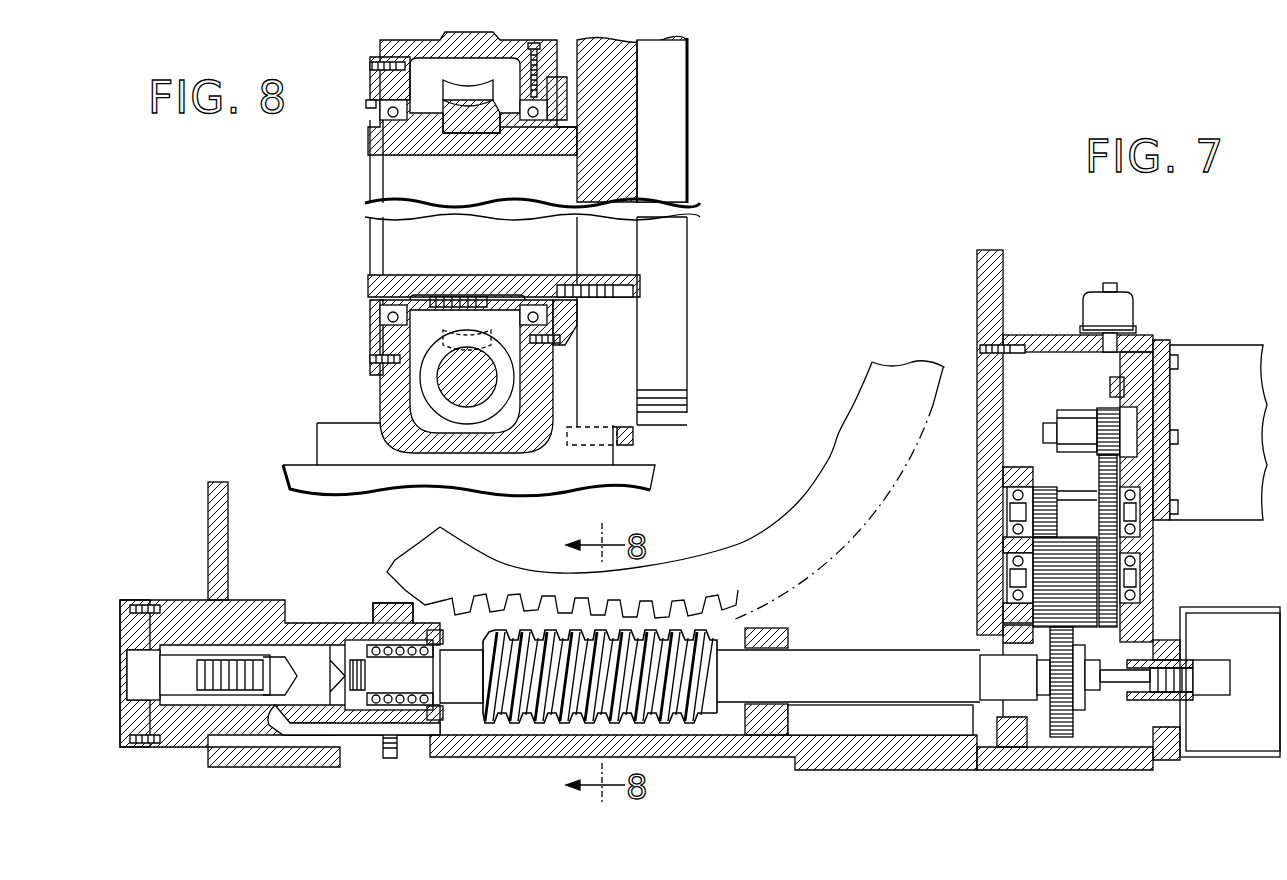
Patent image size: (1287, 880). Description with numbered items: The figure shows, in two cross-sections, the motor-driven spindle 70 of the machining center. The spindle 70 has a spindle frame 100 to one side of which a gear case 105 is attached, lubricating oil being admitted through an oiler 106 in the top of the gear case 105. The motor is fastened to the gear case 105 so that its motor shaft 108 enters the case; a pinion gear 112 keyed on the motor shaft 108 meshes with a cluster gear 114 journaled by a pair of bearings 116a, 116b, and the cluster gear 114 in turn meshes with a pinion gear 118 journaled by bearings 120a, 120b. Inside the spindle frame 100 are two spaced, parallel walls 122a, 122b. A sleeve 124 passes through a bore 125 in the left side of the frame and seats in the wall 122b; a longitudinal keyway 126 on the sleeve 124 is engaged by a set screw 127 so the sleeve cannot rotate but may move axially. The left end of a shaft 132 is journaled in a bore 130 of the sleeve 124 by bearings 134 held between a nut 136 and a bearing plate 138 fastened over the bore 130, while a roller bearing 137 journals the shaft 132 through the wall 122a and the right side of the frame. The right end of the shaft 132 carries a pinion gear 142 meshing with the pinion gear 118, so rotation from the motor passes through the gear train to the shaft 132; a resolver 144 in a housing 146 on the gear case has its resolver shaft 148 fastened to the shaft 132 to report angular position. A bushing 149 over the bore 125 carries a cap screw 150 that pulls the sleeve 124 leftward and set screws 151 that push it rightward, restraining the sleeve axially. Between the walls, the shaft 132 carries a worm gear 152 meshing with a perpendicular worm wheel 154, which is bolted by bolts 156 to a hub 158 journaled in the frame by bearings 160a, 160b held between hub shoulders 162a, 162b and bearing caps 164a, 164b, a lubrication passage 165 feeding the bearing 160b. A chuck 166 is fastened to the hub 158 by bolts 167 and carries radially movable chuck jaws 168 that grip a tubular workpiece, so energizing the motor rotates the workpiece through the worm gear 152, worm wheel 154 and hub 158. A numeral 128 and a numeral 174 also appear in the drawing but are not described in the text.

In FIG. 7, the spindle 70 is at (1070, 285).
In FIG. 8, the spindle frame 100 is at (397, 48).
In FIG. 7, the spindle frame 100 is at (220, 505).
In FIG. 7, the gear case 105 is at (1051, 335).
In FIG. 7, the oiler 106 is at (1137, 305).
In FIG. 7, the motor shaft 108 is at (1075, 419).
In FIG. 7, the pinion gear 112 is at (1098, 431).
In FIG. 7, the cluster gear 114 is at (1070, 512).
In FIG. 7, the bearing 116a is at (1008, 493).
In FIG. 7, the bearing 116b is at (1140, 534).
In FIG. 7, the pinion gear 118 is at (1105, 617).
In FIG. 7, the bearing 120a is at (1008, 565).
In FIG. 7, the bearing 120b is at (1143, 568).
In FIG. 7, the wall 122a is at (800, 624).
In FIG. 7, the wall 122b is at (379, 603).
In FIG. 7, the sleeve 124 is at (295, 620).
In FIG. 7, the bore 125 is at (176, 753).
In FIG. 7, the keyway 126 is at (260, 750).
In FIG. 7, the set screw 127 is at (394, 760).
In FIG. 7, the housing bore 128 is at (308, 738).
In FIG. 7, the bore 130 is at (330, 658).
In FIG. 7, the shaft 132 is at (474, 698).
In FIG. 7, the bearings 134 is at (389, 675).
In FIG. 7, the nut 136 is at (385, 738).
In FIG. 7, the roller bearing 137 is at (792, 640).
In FIG. 7, the bearing plate 138 is at (435, 630).
In FIG. 7, the pinion gear 142 is at (1075, 710).
In FIG. 7, the resolver 144 is at (1218, 680).
In FIG. 7, the housing 146 is at (1260, 607).
In FIG. 7, the resolver shaft 148 is at (1176, 730).
In FIG. 7, the bushing 149 is at (138, 605).
In FIG. 7, the cap screw 150 is at (248, 653).
In FIG. 7, the set screws 151 is at (128, 690).
In FIG. 8, the worm gear 152 is at (428, 377).
In FIG. 7, the worm gear 152 is at (678, 708).
In FIG. 8, the worm wheel 154 is at (475, 93).
In FIG. 7, the worm wheel 154 is at (843, 522).
In FIG. 8, the bolts 156 is at (425, 300).
In FIG. 8, the hub 158 is at (497, 108).
In FIG. 8, the bearing 160a is at (393, 121).
In FIG. 8, the bearing 160b is at (533, 120).
In FIG. 8, the hub shoulder 162a is at (430, 108).
In FIG. 8, the hub shoulder 162b is at (513, 128).
In FIG. 8, the bearing cap 164a is at (374, 90).
In FIG. 8, the bearing cap 164b is at (560, 75).
In FIG. 8, the lubrication passage 165 is at (532, 50).
In FIG. 8, the chuck 166 is at (621, 434).
In FIG. 8, the bolts 167 is at (640, 294).
In FIG. 8, the chuck jaws 168 is at (677, 100).
In FIG. 7, the motor 174 is at (1220, 365).